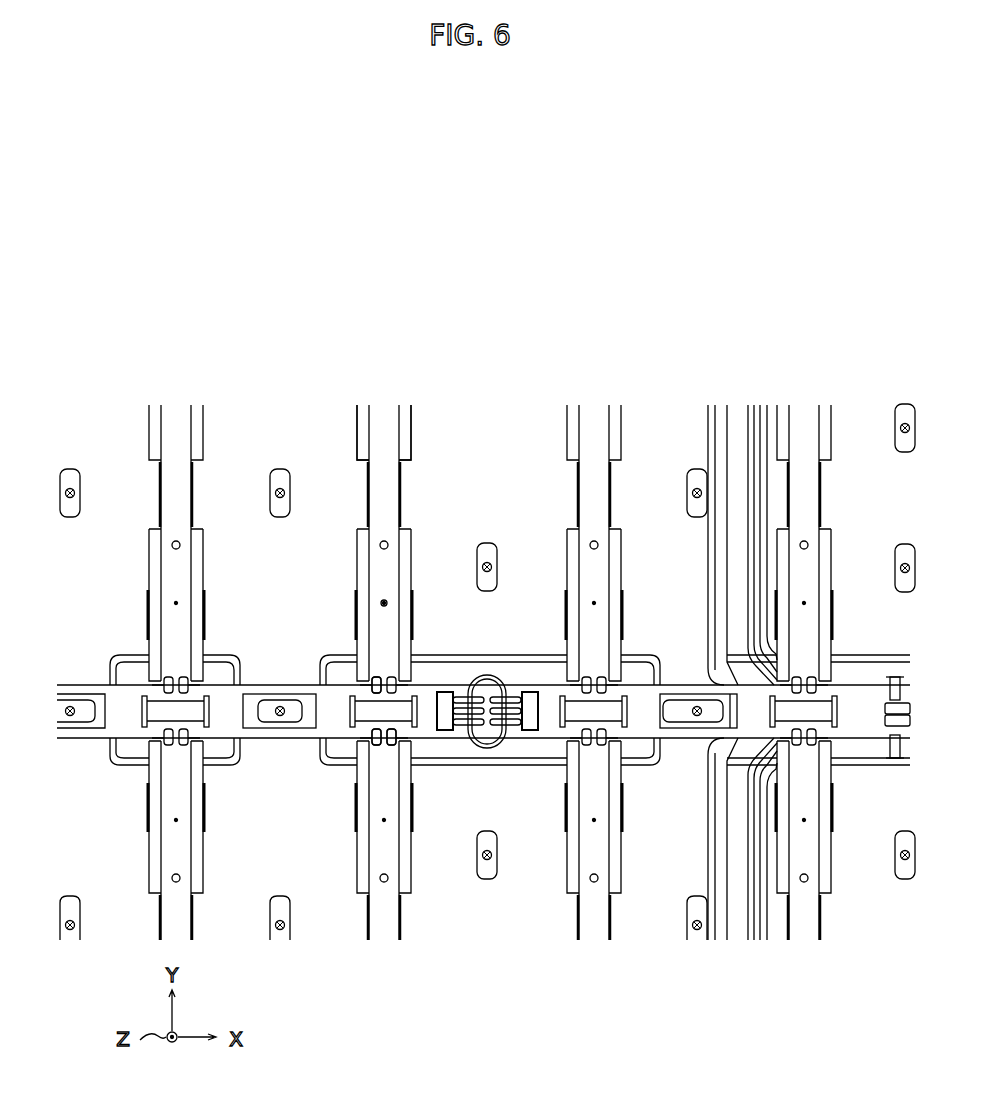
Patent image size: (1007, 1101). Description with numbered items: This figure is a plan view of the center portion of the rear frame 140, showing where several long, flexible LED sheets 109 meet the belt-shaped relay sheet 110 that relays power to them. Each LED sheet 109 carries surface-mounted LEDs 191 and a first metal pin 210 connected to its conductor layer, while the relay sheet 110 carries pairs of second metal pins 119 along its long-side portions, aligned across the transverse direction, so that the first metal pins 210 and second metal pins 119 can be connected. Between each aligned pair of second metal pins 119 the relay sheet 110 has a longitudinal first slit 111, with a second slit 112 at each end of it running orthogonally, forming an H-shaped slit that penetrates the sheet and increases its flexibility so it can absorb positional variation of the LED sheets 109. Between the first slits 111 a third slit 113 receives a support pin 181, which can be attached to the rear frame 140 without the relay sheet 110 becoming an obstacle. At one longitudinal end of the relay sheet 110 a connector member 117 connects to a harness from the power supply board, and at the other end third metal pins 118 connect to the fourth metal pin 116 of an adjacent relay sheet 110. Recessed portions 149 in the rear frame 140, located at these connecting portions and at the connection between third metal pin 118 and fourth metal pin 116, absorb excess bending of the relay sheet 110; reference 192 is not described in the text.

The LED sheet 109 is at (388, 478).
The relay sheet 110 is at (428, 735).
The first slit 111 is at (385, 708).
The second slit 112 is at (365, 690).
The third slit 113 is at (250, 710).
The fourth metal pin 116 is at (895, 760).
The connector member 117 is at (445, 712).
The third metal pin 118 is at (890, 680).
The second metal pin 119 is at (355, 750).
The rear frame 140 is at (655, 430).
The recessed portion 149 is at (135, 678).
The support pin 181 is at (283, 718).
The LED 191 is at (385, 605).
The rail end 192 is at (401, 410).
The first metal pin 210 is at (377, 688).